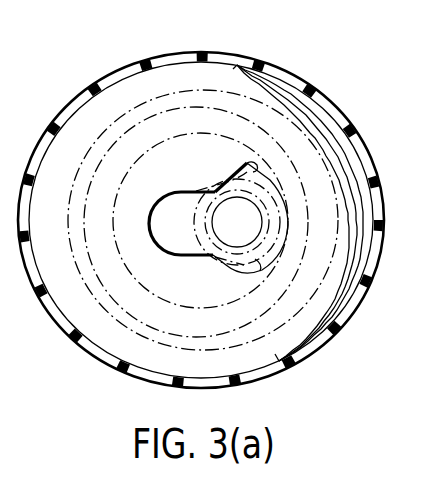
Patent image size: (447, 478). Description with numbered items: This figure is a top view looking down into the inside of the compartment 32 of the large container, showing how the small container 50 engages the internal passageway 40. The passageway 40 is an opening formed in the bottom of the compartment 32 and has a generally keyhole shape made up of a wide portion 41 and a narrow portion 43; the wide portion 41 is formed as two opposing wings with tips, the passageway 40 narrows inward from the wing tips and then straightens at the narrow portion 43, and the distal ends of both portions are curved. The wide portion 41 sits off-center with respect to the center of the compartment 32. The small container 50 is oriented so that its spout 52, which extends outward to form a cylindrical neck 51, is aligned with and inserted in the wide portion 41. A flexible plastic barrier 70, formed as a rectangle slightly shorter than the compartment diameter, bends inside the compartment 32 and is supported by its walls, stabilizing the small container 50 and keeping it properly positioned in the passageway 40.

The compartment 32 is at (133, 48).
The internal passageway 40 is at (204, 223).
The wide portion 41 is at (247, 163).
The narrow portion 43 is at (179, 191).
The small container 50 is at (112, 317).
The cylindrical neck 51 is at (192, 228).
The spout 52 is at (174, 264).
The flexible plastic barrier 70 is at (343, 290).